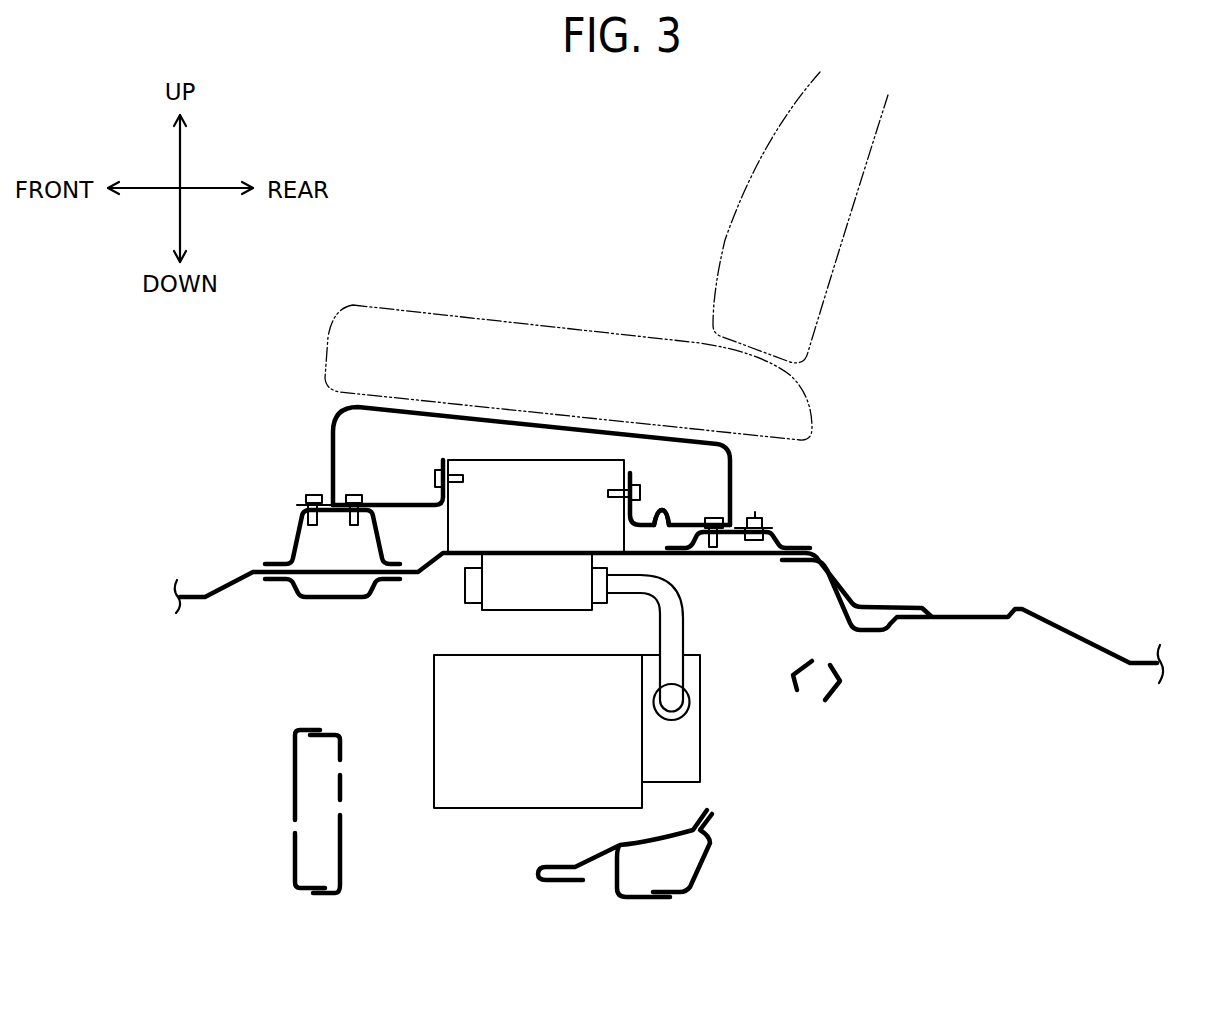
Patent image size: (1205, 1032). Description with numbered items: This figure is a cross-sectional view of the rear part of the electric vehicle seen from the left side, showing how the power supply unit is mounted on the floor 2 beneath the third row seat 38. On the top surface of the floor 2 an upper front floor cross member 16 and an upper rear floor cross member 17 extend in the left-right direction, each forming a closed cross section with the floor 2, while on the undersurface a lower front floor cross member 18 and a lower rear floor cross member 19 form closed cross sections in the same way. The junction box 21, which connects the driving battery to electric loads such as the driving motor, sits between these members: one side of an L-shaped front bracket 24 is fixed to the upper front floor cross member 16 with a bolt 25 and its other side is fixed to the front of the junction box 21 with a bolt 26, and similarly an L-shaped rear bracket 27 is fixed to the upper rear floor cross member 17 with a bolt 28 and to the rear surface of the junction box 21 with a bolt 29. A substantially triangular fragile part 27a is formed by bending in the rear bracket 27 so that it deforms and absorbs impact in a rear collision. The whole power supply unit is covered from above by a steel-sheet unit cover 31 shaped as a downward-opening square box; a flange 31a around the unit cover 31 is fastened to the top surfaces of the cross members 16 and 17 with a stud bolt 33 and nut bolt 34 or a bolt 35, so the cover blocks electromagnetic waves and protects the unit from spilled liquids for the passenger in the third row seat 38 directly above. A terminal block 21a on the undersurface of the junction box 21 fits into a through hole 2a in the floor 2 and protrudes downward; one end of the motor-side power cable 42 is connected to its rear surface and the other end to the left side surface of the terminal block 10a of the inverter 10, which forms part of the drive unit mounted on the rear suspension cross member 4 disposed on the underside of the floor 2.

The floor 2 is at (1040, 620).
The through hole 2a is at (485, 560).
The rear suspension cross member 4 is at (340, 873).
The inverter 10 is at (468, 800).
The terminal block 10a is at (680, 752).
The upper front floor cross member 16 is at (293, 512).
The upper rear floor cross member 17 is at (790, 545).
The lower front floor cross member 18 is at (318, 600).
The lower rear floor cross member 19 is at (870, 635).
The junction box 21 is at (558, 470).
The terminal block 21a is at (512, 600).
The front bracket 24 is at (386, 500).
The bolt 25 is at (354, 492).
The bolt 26 is at (436, 475).
The rear bracket 27 is at (647, 522).
The fragile part 27a is at (668, 518).
The bolt 28 is at (712, 517).
The bolt 29 is at (638, 482).
The unit cover 31 is at (522, 422).
The flange 31a is at (305, 498).
The stud bolt 33 is at (753, 515).
The nut bolt 34 is at (760, 522).
The bolt 35 is at (313, 492).
The third row seat 38 is at (755, 150).
The motor-side power cable 42 is at (693, 630).